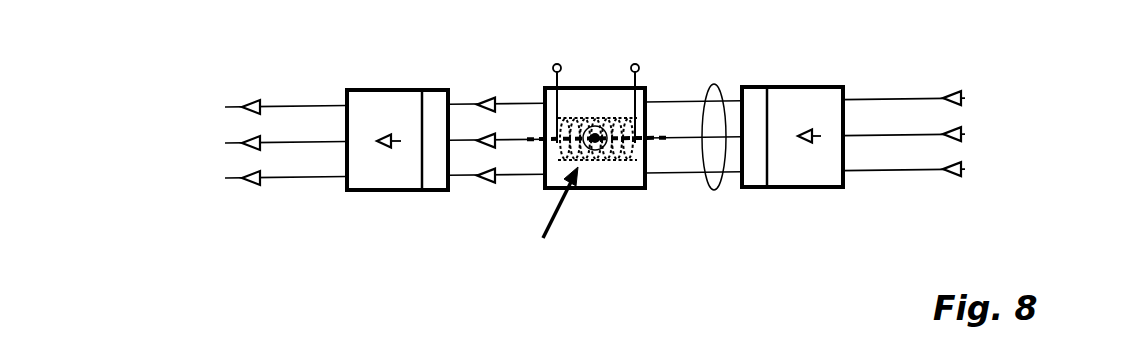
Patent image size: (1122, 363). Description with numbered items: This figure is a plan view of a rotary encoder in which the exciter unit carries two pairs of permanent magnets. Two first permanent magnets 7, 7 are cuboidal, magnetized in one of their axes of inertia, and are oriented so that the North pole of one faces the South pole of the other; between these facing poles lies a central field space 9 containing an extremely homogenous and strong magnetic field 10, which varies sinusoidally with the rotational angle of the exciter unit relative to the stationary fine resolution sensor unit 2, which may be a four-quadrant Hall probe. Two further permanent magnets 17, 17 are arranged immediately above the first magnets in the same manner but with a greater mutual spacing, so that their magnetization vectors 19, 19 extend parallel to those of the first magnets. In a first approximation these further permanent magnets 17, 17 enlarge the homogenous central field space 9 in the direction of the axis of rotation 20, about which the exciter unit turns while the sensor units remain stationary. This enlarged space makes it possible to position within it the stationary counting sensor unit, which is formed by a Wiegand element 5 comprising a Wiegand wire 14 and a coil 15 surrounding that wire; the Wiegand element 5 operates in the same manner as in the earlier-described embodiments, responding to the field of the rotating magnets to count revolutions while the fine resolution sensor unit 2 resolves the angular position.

The fine resolution sensor unit 2 is at (625, 172).
The Wiegand element 5 is at (552, 224).
The first permanent magnet 7 is at (430, 180).
The central field space 9 is at (517, 132).
The magnetic field 10 is at (713, 190).
The Wiegand wire 14 is at (653, 140).
The coil 15 is at (632, 121).
The further permanent magnet 17 is at (363, 92).
The magnetization vector 19 is at (400, 132).
The axis of rotation 20 is at (597, 134).